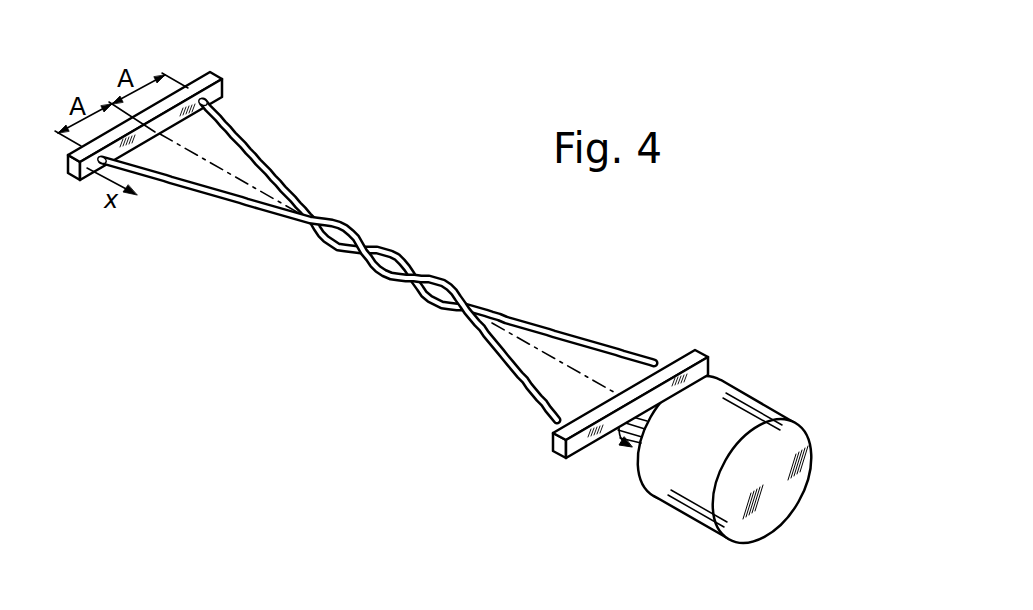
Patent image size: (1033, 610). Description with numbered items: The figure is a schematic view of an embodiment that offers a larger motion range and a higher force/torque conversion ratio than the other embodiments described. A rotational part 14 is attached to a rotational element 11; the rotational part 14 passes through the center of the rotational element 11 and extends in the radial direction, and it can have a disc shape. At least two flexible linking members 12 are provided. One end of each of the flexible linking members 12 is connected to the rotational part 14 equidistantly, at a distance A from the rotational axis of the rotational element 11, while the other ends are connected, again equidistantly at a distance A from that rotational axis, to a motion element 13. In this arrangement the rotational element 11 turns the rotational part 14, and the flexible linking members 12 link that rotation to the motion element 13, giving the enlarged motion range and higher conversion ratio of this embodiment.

The rotational element 11 is at (662, 468).
The flexible linking members 12 is at (257, 207).
The motion element 13 is at (221, 92).
The rotational part 14 is at (553, 448).